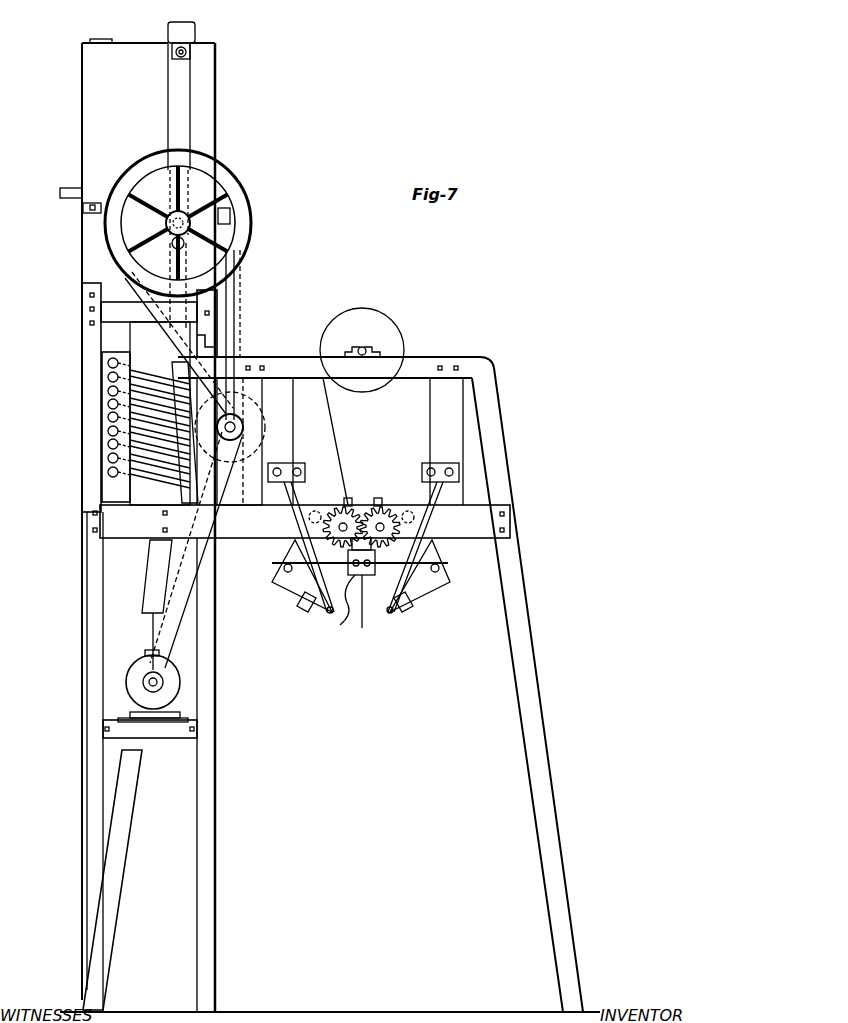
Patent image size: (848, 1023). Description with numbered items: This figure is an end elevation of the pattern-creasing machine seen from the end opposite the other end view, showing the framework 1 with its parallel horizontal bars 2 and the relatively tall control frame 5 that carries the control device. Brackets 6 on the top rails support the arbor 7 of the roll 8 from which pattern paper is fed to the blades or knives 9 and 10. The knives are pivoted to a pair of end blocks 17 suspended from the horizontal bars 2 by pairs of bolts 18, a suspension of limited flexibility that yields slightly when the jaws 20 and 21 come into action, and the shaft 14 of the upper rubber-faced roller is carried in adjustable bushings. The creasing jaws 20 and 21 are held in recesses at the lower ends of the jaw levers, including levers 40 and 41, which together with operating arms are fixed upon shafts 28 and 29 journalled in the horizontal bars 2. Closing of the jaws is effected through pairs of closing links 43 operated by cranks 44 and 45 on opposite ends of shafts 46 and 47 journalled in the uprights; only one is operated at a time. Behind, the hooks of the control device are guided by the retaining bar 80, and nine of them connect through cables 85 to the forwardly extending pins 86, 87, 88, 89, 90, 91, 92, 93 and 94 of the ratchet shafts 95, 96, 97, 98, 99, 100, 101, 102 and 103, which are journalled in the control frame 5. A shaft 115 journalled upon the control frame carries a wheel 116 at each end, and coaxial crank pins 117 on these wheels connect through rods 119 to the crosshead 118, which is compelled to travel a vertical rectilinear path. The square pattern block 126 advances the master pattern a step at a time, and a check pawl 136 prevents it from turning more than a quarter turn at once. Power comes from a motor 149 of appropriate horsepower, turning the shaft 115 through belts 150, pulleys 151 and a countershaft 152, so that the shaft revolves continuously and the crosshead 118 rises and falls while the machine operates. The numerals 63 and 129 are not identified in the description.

The framework 1 is at (495, 458).
The horizontal bars 2 is at (232, 538).
The control frame 5 is at (82, 290).
The brackets 6 is at (375, 356).
The arbor 7 is at (358, 350).
The roll 8 is at (369, 335).
The knife 9 is at (352, 612).
The knife 10 is at (366, 578).
The shaft 14 is at (382, 520).
The end blocks 17 is at (335, 612).
The bolts 18 is at (350, 498).
The creasing jaw 20 is at (410, 600).
The creasing jaw 21 is at (312, 600).
The shaft 28 is at (412, 518).
The shaft 29 is at (312, 517).
The lever 40 is at (432, 588).
The lever 41 is at (272, 578).
The closing links 43 is at (296, 488).
The cranks 44 is at (430, 470).
The cranks 45 is at (298, 468).
The shaft 46 is at (276, 463).
The shaft 47 is at (448, 468).
The gear 63 is at (341, 515).
The retaining bar 80 is at (228, 216).
The cables 85 is at (195, 330).
The pin 86 is at (120, 372).
The pin 87 is at (132, 385).
The pin 88 is at (161, 387).
The pin 89 is at (160, 402).
The pin 90 is at (160, 416).
The pin 91 is at (160, 431).
The pin 92 is at (160, 445).
The pin 93 is at (160, 460).
The pin 94 is at (160, 478).
The ratchet shaft 95 is at (106, 364).
The ratchet shaft 96 is at (106, 378).
The ratchet shaft 97 is at (106, 392).
The ratchet shaft 98 is at (106, 405).
The ratchet shaft 99 is at (106, 418).
The ratchet shaft 100 is at (106, 432).
The ratchet shaft 101 is at (106, 445).
The ratchet shaft 102 is at (106, 459).
The ratchet shaft 103 is at (106, 473).
The shaft 115 is at (190, 227).
The wheel 116 is at (243, 250).
The crank pin 117 is at (200, 260).
The crosshead 118 is at (195, 40).
The rod 119 is at (185, 108).
The pattern block 126 is at (92, 216).
The stop 129 is at (102, 42).
The check pawl 136 is at (62, 190).
The motor 149 is at (180, 686).
The belts 150 is at (240, 300).
The pulleys 151 is at (235, 438).
The countershaft 152 is at (236, 422).